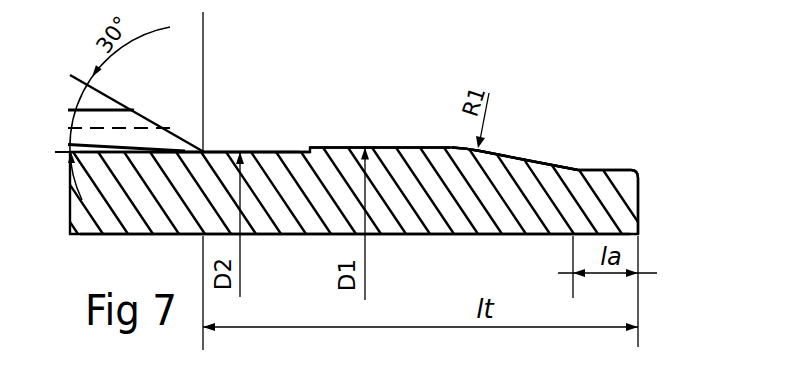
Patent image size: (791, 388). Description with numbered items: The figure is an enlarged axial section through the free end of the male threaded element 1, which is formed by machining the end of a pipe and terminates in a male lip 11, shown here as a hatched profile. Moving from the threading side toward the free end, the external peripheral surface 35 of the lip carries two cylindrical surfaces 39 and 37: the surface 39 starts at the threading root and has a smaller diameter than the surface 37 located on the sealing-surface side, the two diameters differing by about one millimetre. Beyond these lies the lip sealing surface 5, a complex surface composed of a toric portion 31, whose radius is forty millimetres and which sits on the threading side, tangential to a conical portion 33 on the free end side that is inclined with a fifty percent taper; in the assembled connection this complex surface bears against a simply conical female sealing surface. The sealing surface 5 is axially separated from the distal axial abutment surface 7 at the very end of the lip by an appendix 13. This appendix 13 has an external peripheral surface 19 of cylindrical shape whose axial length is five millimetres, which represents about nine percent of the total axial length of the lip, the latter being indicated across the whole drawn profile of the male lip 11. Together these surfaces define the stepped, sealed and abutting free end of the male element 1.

The male threaded element 1 is at (354, 121).
The lip sealing surface 5 is at (477, 57).
The distal axial abutment surface 7 is at (639, 207).
The male lip 11 is at (355, 276).
The appendix 13 is at (595, 168).
The external peripheral surface 19 is at (613, 168).
The toric portion 31 is at (490, 152).
The conical portion 33 is at (536, 160).
The external peripheral surface 35 is at (393, 57).
The cylindrical surface 37 is at (397, 147).
The cylindrical surface 39 is at (292, 152).